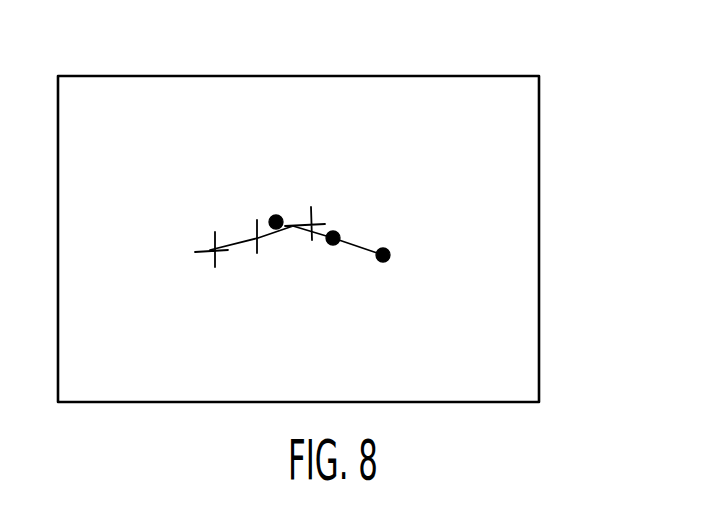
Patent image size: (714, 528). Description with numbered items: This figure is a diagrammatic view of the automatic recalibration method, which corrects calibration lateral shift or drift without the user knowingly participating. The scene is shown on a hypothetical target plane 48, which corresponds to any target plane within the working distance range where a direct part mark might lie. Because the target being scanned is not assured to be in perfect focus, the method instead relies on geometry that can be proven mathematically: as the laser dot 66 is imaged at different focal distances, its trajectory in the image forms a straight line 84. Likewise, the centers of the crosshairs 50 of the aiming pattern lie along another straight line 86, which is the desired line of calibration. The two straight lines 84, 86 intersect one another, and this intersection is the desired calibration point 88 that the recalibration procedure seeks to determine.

The target plane 48 is at (528, 360).
The crosshairs 50 is at (210, 236).
The straight line 86 is at (233, 236).
The calibration point 88 is at (293, 228).
The straight line 84 is at (357, 235).
The laser dot 66 is at (387, 248).